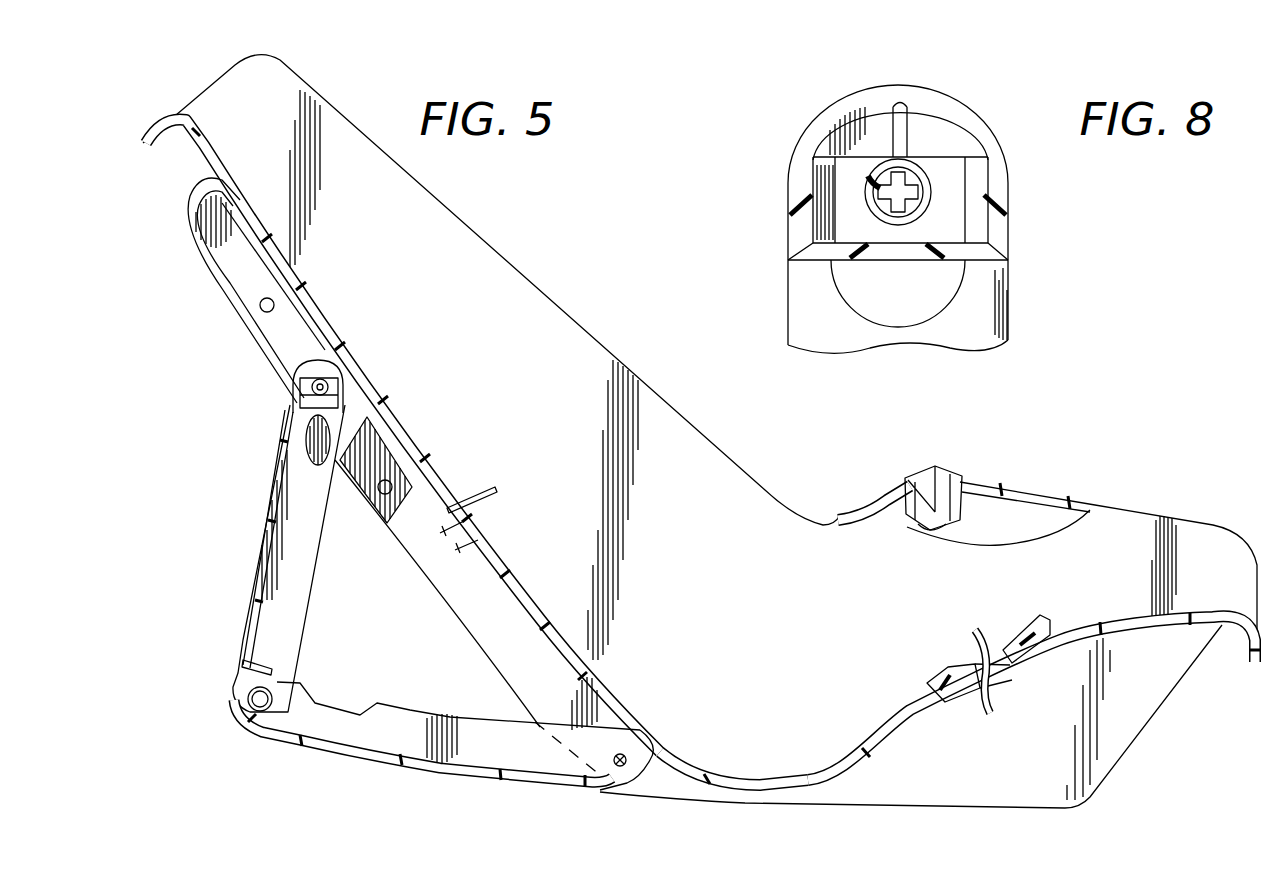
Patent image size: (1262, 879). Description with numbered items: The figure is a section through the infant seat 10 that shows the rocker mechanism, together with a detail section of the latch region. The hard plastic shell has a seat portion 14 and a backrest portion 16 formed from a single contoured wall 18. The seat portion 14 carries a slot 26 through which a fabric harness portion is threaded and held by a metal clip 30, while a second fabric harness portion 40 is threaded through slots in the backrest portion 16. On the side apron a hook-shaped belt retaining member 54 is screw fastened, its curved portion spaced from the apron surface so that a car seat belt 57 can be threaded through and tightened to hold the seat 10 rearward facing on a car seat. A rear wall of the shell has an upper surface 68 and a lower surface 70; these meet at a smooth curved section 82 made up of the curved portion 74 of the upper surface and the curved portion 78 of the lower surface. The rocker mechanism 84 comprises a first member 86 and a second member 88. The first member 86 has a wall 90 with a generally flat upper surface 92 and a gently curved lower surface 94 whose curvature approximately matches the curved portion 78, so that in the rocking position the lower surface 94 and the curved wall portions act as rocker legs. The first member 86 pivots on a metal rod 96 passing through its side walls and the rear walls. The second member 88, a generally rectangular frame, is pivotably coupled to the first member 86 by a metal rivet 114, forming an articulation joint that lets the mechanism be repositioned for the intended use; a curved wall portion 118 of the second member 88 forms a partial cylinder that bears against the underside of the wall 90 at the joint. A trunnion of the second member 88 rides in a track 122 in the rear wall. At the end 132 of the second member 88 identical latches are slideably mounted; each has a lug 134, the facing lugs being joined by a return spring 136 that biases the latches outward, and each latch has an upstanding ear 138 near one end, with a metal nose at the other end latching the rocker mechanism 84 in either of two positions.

In FIG. 5, the infant seat 10 is at (586, 250).
In FIG. 5, the seat portion 14 is at (900, 727).
In FIG. 5, the backrest portion 16 is at (425, 465).
In FIG. 5, the contoured wall 18 is at (692, 750).
In FIG. 5, the slot 26 is at (985, 702).
In FIG. 5, the metal clip 30 is at (992, 713).
In FIG. 5, the second fabric harness portion 40 is at (485, 495).
In FIG. 5, the belt retaining member 54 is at (930, 478).
In FIG. 5, the car seat belt 57 is at (851, 512).
In FIG. 5, the upper surface 68 is at (262, 370).
In FIG. 5, the lower surface 70 is at (858, 808).
In FIG. 5, the curved portion 74 is at (492, 680).
In FIG. 5, the curved portion 78 is at (710, 792).
In FIG. 5, the curved section 82 is at (560, 775).
In FIG. 5, the rocker mechanism 84 is at (242, 591).
In FIG. 5, the first member 86 is at (410, 715).
In FIG. 5, the second member 88 is at (292, 598).
In FIG. 5, the wall 90 is at (432, 772).
In FIG. 5, the upper surface 92 is at (345, 765).
In FIG. 5, the lower surface 94 is at (512, 783).
In FIG. 5, the metal rod 96 is at (624, 754).
In FIG. 5, the metal rivet 114 is at (278, 690).
In FIG. 5, the curved wall portion 118 is at (245, 705).
In FIG. 5, the track 122 is at (240, 285).
In FIG. 8, the end 132 is at (950, 98).
In FIG. 8, the lug 134 is at (917, 187).
In FIG. 8, the return spring 136 is at (866, 184).
In FIG. 8, the upstanding ear 138 is at (950, 283).